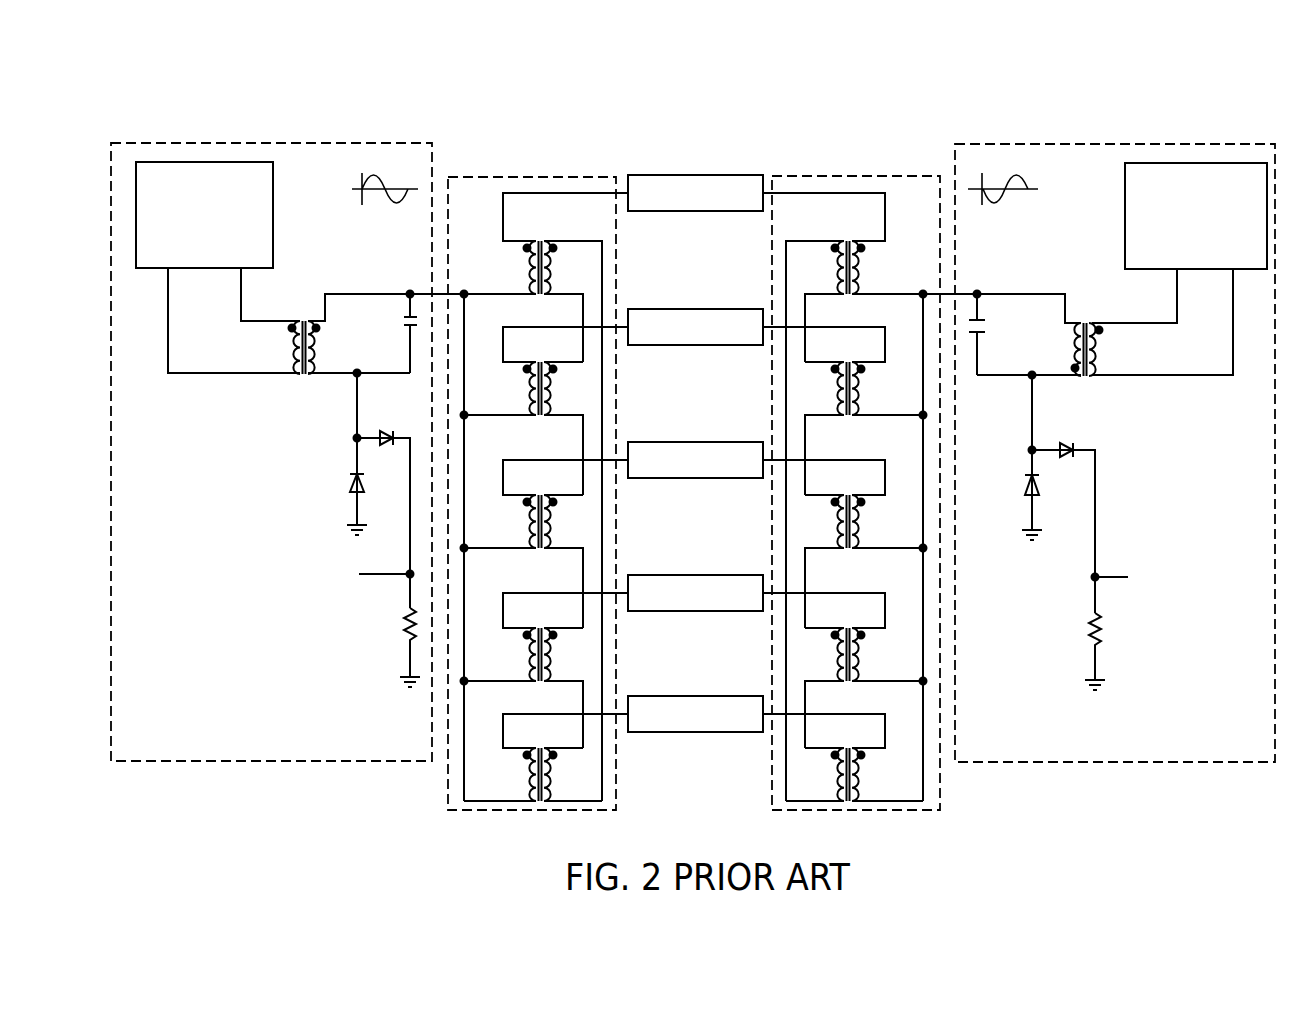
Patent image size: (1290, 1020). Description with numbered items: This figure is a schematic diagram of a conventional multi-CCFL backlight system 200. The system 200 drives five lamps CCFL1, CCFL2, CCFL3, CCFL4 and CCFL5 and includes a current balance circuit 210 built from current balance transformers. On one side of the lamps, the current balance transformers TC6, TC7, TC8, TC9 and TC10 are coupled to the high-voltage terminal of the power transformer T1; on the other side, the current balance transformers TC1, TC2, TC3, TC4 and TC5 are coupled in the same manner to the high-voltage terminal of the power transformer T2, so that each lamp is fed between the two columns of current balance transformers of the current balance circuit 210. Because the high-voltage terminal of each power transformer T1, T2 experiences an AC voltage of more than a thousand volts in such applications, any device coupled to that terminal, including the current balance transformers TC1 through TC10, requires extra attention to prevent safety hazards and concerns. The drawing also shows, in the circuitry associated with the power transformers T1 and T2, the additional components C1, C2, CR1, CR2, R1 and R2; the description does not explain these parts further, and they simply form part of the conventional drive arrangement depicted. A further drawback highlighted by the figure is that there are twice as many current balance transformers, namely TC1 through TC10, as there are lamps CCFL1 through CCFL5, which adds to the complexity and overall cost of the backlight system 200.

The multi-CCFL backlight system 200 is at (198, 123).
The current balance circuit 210 is at (566, 177).
The power transformer T1 is at (304, 333).
The power transformer T2 is at (1087, 336).
The capacitor C1 is at (392, 333).
The capacitor C2 is at (993, 334).
The diode CR1 is at (331, 486).
The diode CR2 is at (1007, 495).
The resistor R1 is at (392, 647).
The resistor R2 is at (1081, 651).
The current balance transformer TC1 is at (843, 277).
The current balance transformer TC2 is at (843, 411).
The current balance transformer TC3 is at (843, 544).
The current balance transformer TC4 is at (843, 670).
The current balance transformer TC5 is at (843, 757).
The current balance transformer TC6 is at (546, 277).
The current balance transformer TC7 is at (546, 411).
The current balance transformer TC8 is at (546, 544).
The current balance transformer TC9 is at (546, 670).
The current balance transformer TC10 is at (546, 757).
The lamp CCFL1 is at (695, 193).
The lamp CCFL2 is at (695, 327).
The lamp CCFL3 is at (695, 460).
The lamp CCFL4 is at (695, 593).
The lamp CCFL5 is at (695, 714).